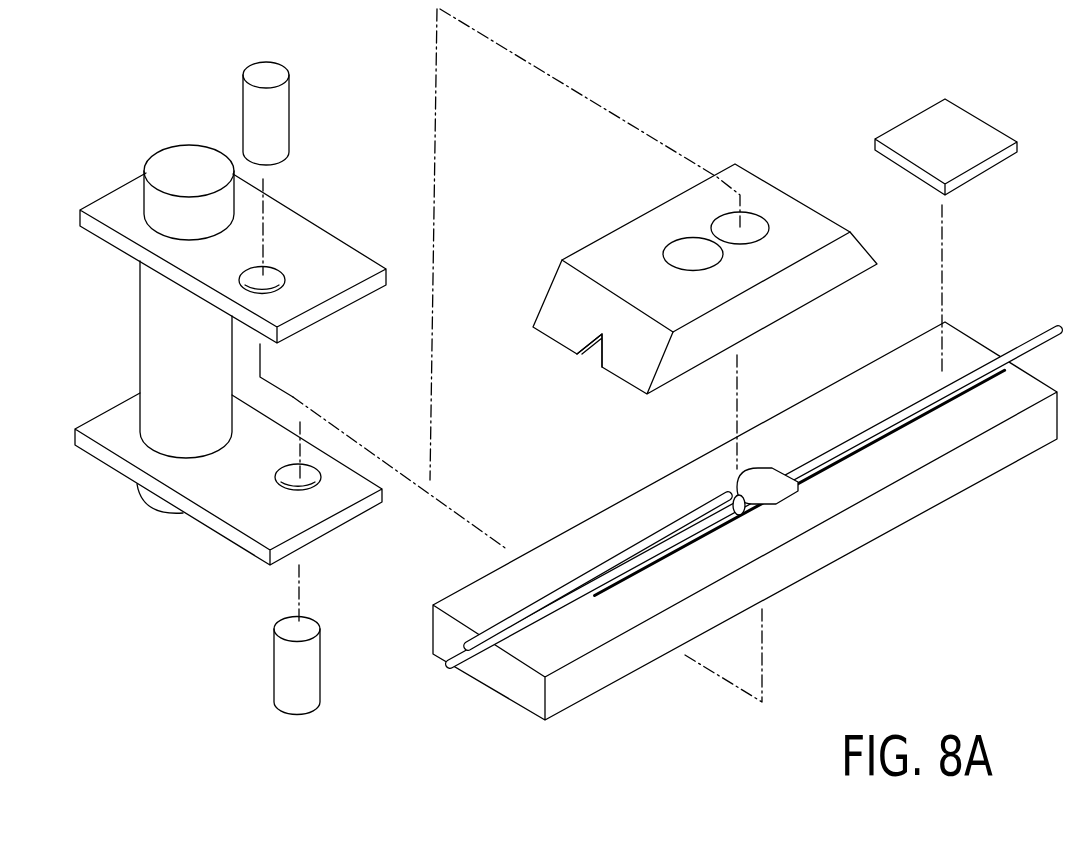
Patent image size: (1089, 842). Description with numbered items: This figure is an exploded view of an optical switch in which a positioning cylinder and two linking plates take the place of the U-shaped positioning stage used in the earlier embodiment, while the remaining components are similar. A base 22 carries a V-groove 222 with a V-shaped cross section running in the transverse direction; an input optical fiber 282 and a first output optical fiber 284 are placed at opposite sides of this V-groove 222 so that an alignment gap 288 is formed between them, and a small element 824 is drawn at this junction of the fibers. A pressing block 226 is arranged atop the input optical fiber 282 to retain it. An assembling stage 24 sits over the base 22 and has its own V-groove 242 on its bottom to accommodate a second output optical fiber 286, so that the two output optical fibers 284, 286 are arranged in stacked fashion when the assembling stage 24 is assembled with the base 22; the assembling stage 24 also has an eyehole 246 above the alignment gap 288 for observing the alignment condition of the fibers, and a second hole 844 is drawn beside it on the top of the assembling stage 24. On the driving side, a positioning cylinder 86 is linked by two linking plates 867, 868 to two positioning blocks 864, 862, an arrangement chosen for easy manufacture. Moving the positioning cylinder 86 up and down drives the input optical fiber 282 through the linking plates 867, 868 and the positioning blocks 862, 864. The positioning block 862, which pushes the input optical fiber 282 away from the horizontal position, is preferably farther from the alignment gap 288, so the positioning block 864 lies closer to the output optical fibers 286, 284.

The base 22 is at (745, 521).
The V-groove 222 is at (897, 393).
The pressing block 226 is at (965, 125).
The assembling stage 24 is at (692, 283).
The V-groove 242 is at (595, 360).
The eyehole 246 is at (693, 230).
The hole 844 is at (762, 212).
The input optical fiber 282 is at (1033, 335).
The first output optical fiber 284 is at (445, 665).
The second output optical fiber 286 is at (466, 648).
The alignment gap 288 is at (743, 510).
The sleeve 824 is at (793, 490).
The positioning cylinder 86 is at (167, 155).
The positioning block 862 is at (277, 667).
The positioning block 864 is at (282, 113).
The linking plate 867 is at (323, 238).
The linking plate 868 is at (212, 521).